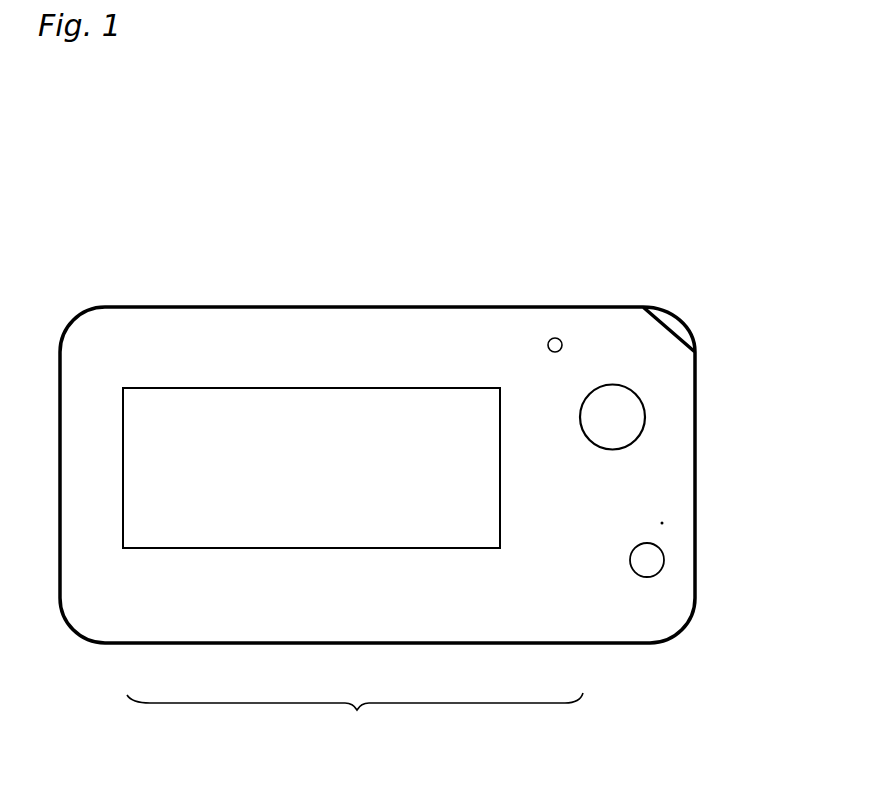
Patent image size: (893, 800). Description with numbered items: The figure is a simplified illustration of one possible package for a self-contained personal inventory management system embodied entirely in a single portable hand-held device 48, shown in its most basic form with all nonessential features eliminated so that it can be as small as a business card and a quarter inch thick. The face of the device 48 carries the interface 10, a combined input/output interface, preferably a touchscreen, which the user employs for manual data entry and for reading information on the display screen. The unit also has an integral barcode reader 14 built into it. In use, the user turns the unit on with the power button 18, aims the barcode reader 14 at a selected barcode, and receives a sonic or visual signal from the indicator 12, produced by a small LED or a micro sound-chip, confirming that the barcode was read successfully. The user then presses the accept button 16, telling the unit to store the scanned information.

The interface 10 is at (304, 403).
The indicator 12 is at (564, 335).
The integral barcode reader 14 is at (683, 320).
The accept button 16 is at (645, 415).
The power button 18 is at (678, 562).
The portable hand-held device 48 is at (357, 710).